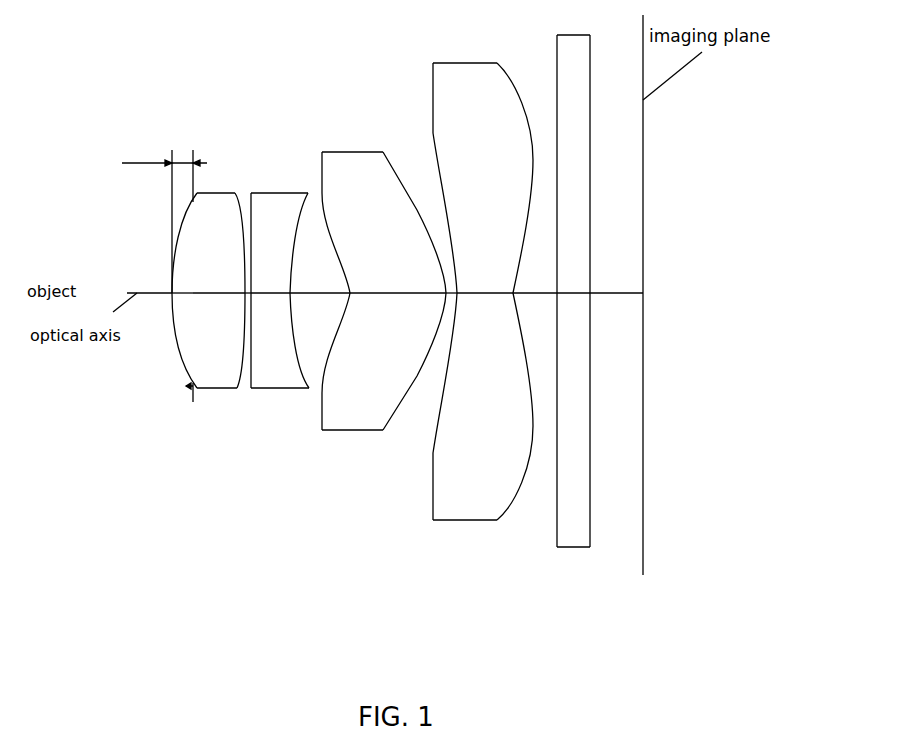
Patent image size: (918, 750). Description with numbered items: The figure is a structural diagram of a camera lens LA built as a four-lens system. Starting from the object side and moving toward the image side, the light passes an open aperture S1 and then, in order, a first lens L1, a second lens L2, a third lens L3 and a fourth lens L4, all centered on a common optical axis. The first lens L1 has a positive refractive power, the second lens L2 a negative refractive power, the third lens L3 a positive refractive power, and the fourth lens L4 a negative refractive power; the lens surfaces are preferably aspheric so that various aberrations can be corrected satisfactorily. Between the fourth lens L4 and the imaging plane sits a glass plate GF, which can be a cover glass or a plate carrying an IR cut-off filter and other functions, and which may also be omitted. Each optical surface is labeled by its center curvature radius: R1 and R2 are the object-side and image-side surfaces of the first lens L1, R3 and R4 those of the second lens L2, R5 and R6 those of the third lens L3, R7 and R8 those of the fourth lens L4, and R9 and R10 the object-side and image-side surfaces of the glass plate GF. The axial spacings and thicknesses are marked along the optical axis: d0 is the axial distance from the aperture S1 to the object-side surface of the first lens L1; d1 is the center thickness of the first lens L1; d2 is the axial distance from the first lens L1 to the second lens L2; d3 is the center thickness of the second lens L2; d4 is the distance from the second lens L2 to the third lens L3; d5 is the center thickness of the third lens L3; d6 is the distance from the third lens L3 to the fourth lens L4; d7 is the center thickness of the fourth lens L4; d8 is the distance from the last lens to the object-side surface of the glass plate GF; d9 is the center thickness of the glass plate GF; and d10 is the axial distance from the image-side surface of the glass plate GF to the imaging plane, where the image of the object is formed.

The camera lens LA is at (193, 90).
The first lens L1 is at (194, 326).
The second lens L2 is at (292, 332).
The third lens L3 is at (364, 264).
The fourth lens L4 is at (458, 306).
The glass plate GF is at (576, 303).
The aperture S1 is at (194, 198).
The curvature radius of the object side surface of the first lens R1 is at (173, 325).
The curvature radius of the image side surface of the first lens R2 is at (246, 310).
The curvature radius of the object side surface of the second lens R3 is at (254, 330).
The curvature radius of the image side surface of the second lens R4 is at (295, 350).
The curvature radius of the object side surface of the third lens R5 is at (333, 222).
The curvature radius of the image side surface of the third lens R6 is at (417, 210).
The curvature radius of the object side surface of the fourth lens R7 is at (456, 335).
The curvature radius of the image side surface of the fourth lens R8 is at (518, 335).
The curvature radius of the object side surface of the glass plate R9 is at (556, 345).
The curvature radius of the image side surface of the glass plate R10 is at (589, 350).
The axial distance from the aperture to the object side surface of the first lens d0 is at (164, 221).
The center thickness of the first lens d1 is at (219, 284).
The axial distance from the first lens to the second lens d2 is at (243, 293).
The center thickness of the second lens d3 is at (270, 284).
The axial distance from the second lens to the third lens d4 is at (320, 284).
The center thickness of the third lens d5 is at (398, 284).
The axial distance from the third lens to the fourth lens d6 is at (446, 290).
The center thickness of the fourth lens d7 is at (485, 284).
The axial distance from the fourth lens to the glass plate d8 is at (535, 284).
The center thickness of the glass plate d9 is at (573, 284).
The axial distance from the glass plate to the imaging plane d10 is at (616, 284).